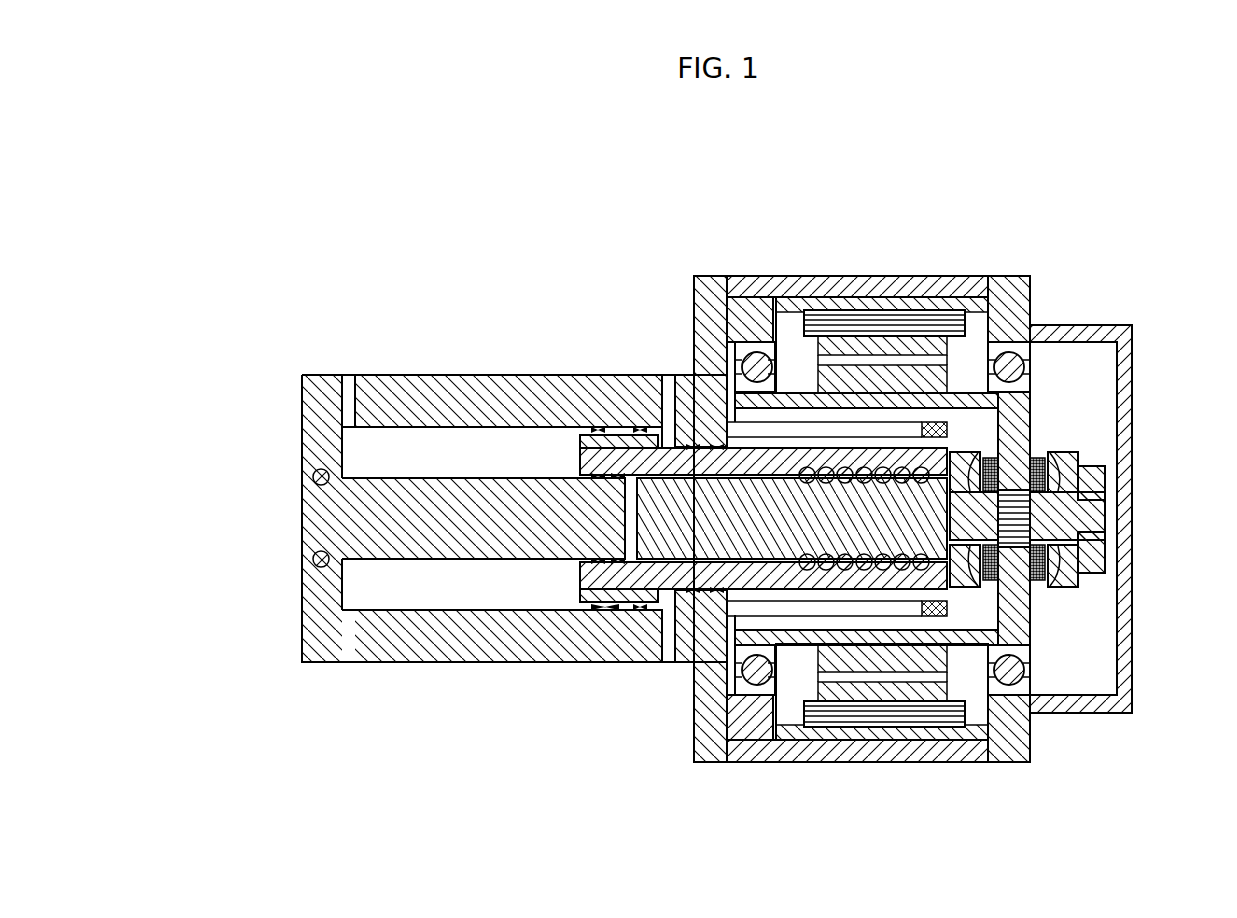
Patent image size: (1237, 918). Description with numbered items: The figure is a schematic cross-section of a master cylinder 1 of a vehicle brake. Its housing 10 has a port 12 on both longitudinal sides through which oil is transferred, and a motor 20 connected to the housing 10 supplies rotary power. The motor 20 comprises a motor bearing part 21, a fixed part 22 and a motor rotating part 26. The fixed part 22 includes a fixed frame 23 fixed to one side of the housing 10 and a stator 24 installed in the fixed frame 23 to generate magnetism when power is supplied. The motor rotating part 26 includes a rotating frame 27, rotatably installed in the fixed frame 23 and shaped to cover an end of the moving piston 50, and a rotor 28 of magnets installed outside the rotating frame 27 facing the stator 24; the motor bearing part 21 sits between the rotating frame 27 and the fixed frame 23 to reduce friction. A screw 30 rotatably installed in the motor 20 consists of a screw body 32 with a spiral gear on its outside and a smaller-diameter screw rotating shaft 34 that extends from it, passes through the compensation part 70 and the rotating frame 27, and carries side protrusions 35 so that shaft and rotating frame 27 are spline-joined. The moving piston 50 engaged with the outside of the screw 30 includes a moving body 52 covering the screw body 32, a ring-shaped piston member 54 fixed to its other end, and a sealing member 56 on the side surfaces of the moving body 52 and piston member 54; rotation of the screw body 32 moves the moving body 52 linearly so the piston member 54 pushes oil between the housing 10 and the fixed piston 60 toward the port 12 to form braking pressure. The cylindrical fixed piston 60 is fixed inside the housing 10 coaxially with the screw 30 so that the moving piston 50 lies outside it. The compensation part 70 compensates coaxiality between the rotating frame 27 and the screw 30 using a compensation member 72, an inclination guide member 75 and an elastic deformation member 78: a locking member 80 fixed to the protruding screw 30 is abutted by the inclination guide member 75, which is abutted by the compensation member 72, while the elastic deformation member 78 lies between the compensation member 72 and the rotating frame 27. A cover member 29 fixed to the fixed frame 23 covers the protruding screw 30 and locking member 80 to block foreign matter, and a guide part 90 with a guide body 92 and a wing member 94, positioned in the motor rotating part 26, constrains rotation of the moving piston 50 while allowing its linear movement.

The master cylinder 1 is at (846, 186).
The housing 10 is at (497, 352).
The port 12 is at (348, 382).
The motor 20 is at (925, 236).
The motor bearing part 21 is at (1030, 375).
The fixed part 22 is at (874, 258).
The fixed frame 23 is at (1010, 275).
The stator 24 is at (822, 328).
The motor rotating part 26 is at (770, 834).
The rotating frame 27 is at (803, 640).
The rotor 28 is at (853, 655).
The cover member 29 is at (1130, 600).
The screw 30 is at (627, 511).
The screw body 32 is at (688, 522).
The screw rotating shaft 34 is at (1093, 508).
The side protrusions 35 is at (1063, 483).
The moving piston 50 is at (566, 459).
The moving body 52 is at (772, 458).
The piston member 54 is at (615, 433).
The sealing member 56 is at (600, 612).
The fixed piston 60 is at (410, 522).
The compensation part 70 is at (1065, 771).
The compensation member 72 is at (1068, 587).
The inclination guide member 75 is at (1087, 565).
The elastic deformation member 78 is at (1047, 587).
The locking member 80 is at (1100, 547).
The guide part 90 is at (1013, 173).
The guide body 92 is at (875, 426).
The wing member 94 is at (937, 422).